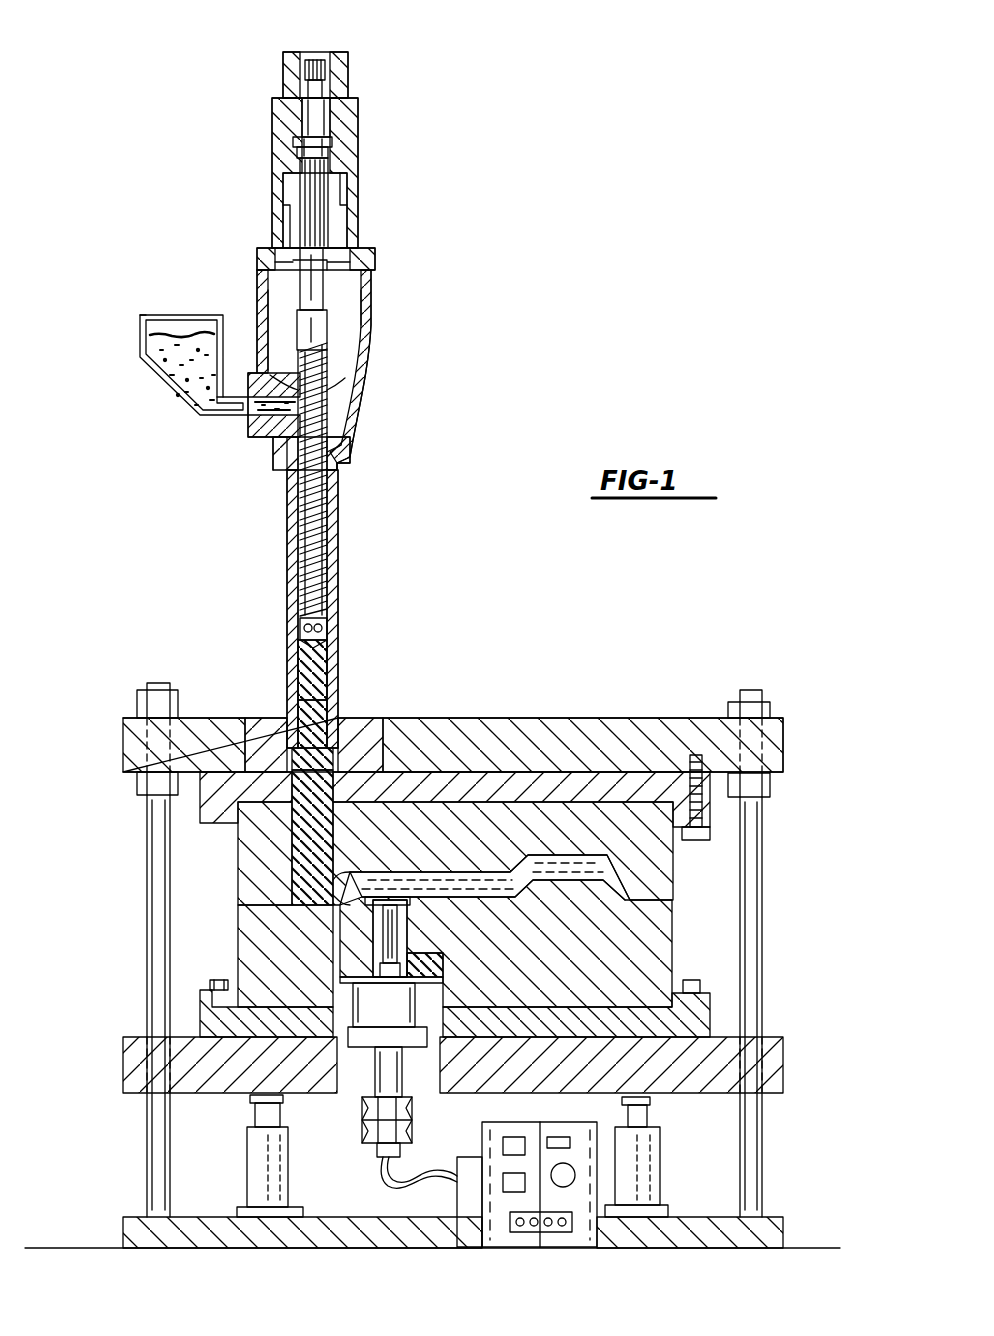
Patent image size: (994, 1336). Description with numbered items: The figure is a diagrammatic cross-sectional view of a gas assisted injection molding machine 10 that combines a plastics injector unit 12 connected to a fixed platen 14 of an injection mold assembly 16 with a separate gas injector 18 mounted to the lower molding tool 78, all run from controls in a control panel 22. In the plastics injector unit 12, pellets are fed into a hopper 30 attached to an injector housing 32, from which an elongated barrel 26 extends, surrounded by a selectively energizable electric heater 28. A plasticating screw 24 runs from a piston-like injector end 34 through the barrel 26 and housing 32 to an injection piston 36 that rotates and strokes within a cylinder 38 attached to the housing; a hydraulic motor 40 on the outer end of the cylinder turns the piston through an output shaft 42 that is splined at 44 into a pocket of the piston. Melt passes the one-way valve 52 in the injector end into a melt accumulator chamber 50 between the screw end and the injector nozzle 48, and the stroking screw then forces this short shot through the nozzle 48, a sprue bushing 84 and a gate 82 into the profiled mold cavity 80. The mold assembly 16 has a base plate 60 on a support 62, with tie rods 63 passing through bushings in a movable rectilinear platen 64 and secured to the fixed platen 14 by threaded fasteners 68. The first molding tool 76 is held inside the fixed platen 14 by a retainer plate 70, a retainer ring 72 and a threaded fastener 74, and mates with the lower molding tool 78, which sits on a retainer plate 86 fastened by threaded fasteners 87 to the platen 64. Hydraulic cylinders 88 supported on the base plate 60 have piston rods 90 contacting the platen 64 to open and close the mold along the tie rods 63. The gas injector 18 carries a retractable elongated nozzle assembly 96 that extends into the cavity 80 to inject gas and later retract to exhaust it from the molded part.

The injection molding machine 10 is at (440, 678).
The plastics injector unit 12 is at (395, 380).
The fixed platen 14 is at (550, 718).
The injection mold assembly 16 is at (768, 868).
The gas injector 18 is at (358, 1075).
The control panel 22 is at (538, 1250).
The plasticating screw 24 is at (350, 447).
The elongated barrel 26 is at (327, 627).
The electric heater 28 is at (298, 608).
The hopper 30 is at (140, 357).
The injector housing 32 is at (257, 283).
The piston-like injector end 34 is at (300, 632).
The injection piston 36 is at (347, 182).
The cylinder 38 is at (358, 122).
The hydraulic motor 40 is at (340, 62).
The output shaft 42 is at (332, 148).
The spline 44 is at (302, 210).
The injector nozzle 48 is at (338, 712).
The melt accumulator chamber 50 is at (298, 700).
The one-way valve 52 is at (330, 628).
The base plate 60 is at (650, 1240).
The support 62 is at (785, 1248).
The tie rods 63 is at (148, 945).
The movable rectilinear platen 64 is at (783, 1068).
The threaded fasteners 68 is at (137, 700).
The retainer plate 70 is at (612, 740).
The retainer ring 72 is at (238, 822).
The threaded fastener 74 is at (690, 840).
The first molding tool 76 is at (440, 820).
The lower molding tool 78 is at (620, 962).
The mold cavity 80 is at (565, 880).
The gate 82 is at (360, 900).
The sprue bushing 84 is at (292, 860).
The retainer plate 86 is at (198, 1010).
The threaded fasteners 87 is at (216, 975).
The hydraulic cylinders 88 is at (255, 1168).
The piston rods 90 is at (648, 1122).
The nozzle assembly 96 is at (405, 925).